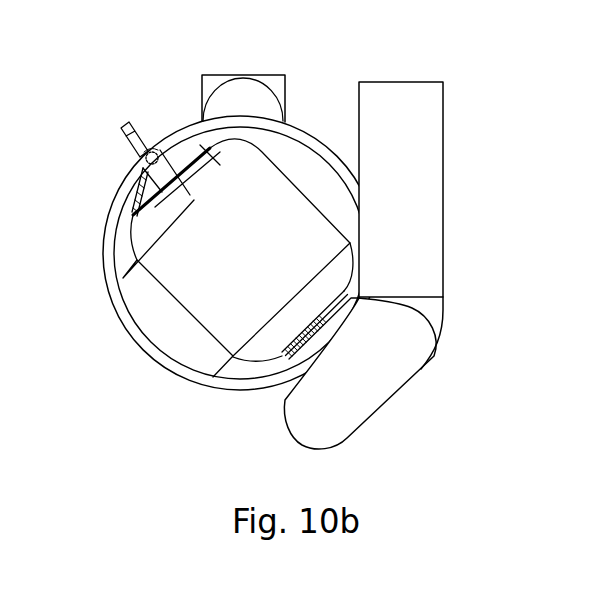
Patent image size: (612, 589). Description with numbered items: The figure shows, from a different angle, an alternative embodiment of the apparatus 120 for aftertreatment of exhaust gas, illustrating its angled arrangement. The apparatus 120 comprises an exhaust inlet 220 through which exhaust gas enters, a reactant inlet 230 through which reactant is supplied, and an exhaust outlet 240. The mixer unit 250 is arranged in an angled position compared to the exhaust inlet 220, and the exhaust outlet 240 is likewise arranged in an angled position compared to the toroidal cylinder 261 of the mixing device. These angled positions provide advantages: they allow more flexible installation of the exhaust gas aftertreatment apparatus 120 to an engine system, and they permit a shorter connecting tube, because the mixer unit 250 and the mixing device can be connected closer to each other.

The apparatus for aftertreatment of exhaust gas 120 is at (572, 252).
The exhaust inlet 220 is at (202, 77).
The reactant inlet 230 is at (121, 129).
The exhaust outlet 240 is at (444, 193).
The mixer unit 250 is at (241, 258).
The toroidal cylinder 261 is at (420, 372).